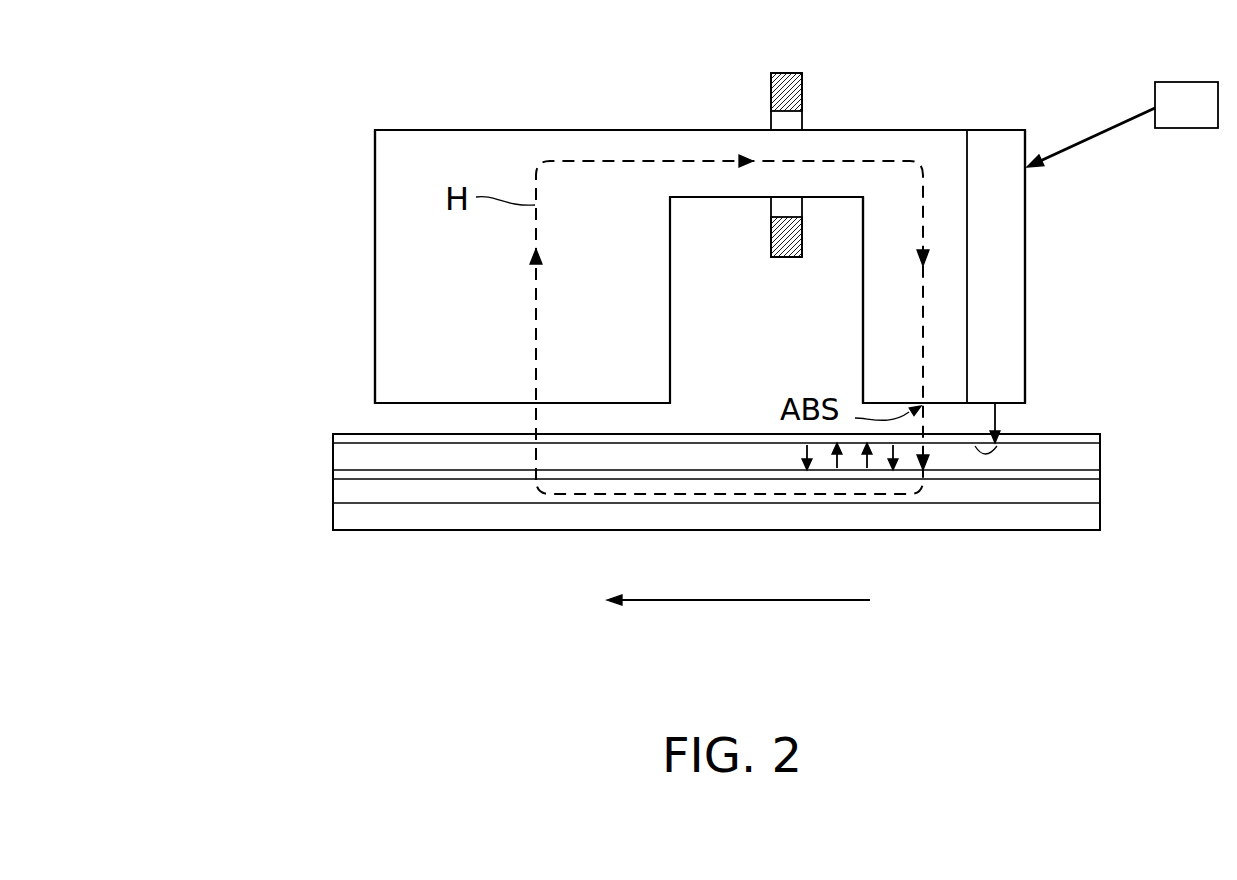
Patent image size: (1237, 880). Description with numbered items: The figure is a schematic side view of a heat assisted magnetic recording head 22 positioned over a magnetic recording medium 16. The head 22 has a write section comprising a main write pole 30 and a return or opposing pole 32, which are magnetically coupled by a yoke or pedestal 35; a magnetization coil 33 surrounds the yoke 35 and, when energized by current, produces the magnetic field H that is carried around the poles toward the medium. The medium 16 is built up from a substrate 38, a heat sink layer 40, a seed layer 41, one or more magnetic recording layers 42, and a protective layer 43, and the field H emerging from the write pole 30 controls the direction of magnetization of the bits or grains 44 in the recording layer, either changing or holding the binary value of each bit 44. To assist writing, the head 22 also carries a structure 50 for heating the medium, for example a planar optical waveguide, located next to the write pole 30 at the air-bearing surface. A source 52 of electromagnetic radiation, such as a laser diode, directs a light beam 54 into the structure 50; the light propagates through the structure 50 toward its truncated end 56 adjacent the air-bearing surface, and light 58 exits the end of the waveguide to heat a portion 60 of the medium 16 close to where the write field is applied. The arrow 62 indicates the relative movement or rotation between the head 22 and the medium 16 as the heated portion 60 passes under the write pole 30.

The magnetic recording medium 16 is at (287, 408).
The HAMR recording head 22 is at (332, 152).
The main write pole 30 is at (873, 320).
The return pole 32 is at (385, 247).
The magnetization coil 33 is at (783, 93).
The yoke 35 is at (862, 145).
The substrate 38 is at (507, 518).
The heat sink layer 40 is at (338, 492).
The seed layer 41 is at (338, 477).
The magnetic recording layer 42 is at (343, 458).
The protective layer 43 is at (345, 437).
The bits 44 is at (797, 458).
The structure for heating 50 is at (1027, 260).
The source of electromagnetic radiation 52 is at (1180, 98).
The light beam 54 is at (1090, 135).
The truncated end 56 is at (1025, 412).
The light 58 is at (995, 426).
The heated portion 60 is at (1003, 446).
The arrow 62 is at (697, 602).